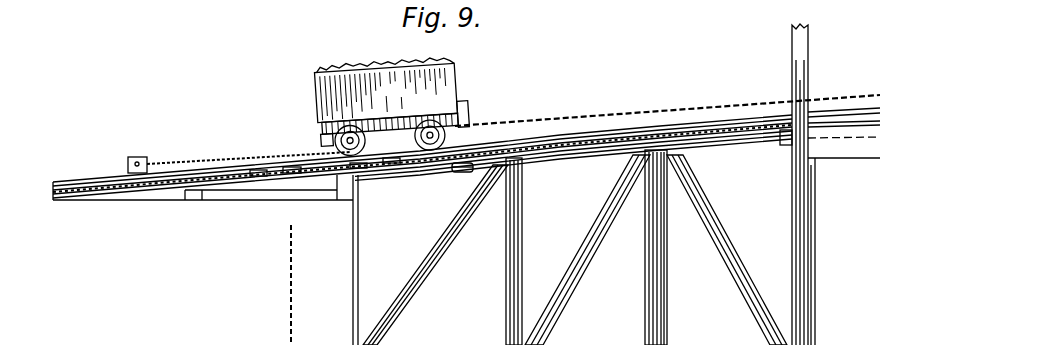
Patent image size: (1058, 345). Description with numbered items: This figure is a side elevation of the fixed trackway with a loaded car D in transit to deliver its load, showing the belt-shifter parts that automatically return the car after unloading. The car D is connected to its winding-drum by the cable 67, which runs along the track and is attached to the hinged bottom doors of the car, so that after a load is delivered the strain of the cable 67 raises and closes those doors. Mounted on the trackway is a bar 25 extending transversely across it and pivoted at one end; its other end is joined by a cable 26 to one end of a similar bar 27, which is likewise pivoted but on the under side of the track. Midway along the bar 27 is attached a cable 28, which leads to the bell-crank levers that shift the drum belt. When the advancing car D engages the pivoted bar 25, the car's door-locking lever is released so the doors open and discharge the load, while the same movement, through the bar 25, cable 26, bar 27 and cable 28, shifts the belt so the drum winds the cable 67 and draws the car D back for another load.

The bar 25 is at (138, 155).
The cable 26 is at (250, 166).
The bar 27 is at (456, 172).
The cable 28 is at (567, 158).
The cable 67 is at (567, 123).
The car D is at (392, 107).